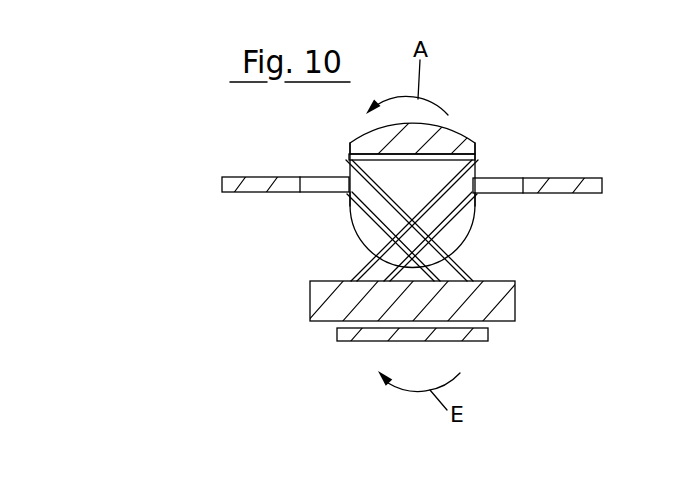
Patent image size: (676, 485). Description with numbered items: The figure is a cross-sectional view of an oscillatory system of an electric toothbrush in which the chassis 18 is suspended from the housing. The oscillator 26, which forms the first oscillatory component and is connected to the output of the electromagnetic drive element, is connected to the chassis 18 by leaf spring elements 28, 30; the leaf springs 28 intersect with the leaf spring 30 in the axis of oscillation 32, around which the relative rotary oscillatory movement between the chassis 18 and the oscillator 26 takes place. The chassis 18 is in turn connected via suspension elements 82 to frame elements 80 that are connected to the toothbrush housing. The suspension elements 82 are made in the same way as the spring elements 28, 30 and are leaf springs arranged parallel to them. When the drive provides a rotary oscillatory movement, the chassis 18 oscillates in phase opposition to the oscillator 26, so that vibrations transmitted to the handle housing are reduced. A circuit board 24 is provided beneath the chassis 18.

The chassis 18 is at (518, 308).
The circuit board 24 is at (348, 336).
The oscillator 26 is at (459, 127).
The leaf spring elements 28 is at (443, 247).
The leaf spring element 30 is at (380, 257).
The axis of oscillation 32 is at (405, 221).
The frame elements 80 is at (211, 164).
The suspension elements 82 is at (333, 213).